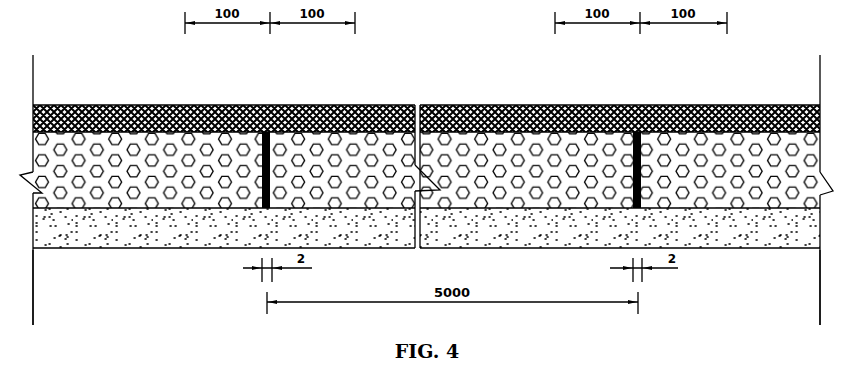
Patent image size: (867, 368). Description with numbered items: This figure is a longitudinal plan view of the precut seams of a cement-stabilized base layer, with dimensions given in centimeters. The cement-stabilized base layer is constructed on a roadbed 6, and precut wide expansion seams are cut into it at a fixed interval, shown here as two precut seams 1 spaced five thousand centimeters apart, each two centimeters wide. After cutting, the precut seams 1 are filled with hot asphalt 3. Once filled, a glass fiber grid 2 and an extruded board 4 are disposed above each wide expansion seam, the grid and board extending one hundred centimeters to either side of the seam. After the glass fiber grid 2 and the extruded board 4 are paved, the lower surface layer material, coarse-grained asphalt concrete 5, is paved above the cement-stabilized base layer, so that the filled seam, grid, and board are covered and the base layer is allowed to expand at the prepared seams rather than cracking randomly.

The precut seams 1 is at (267, 131).
The glass fiber grid 2 is at (207, 131).
The hot asphalt 3 is at (265, 195).
The extruded board 4 is at (270, 160).
The coarse-grained asphalt concrete (AC-25) 5 is at (320, 105).
The roadbed 6 is at (426, 287).